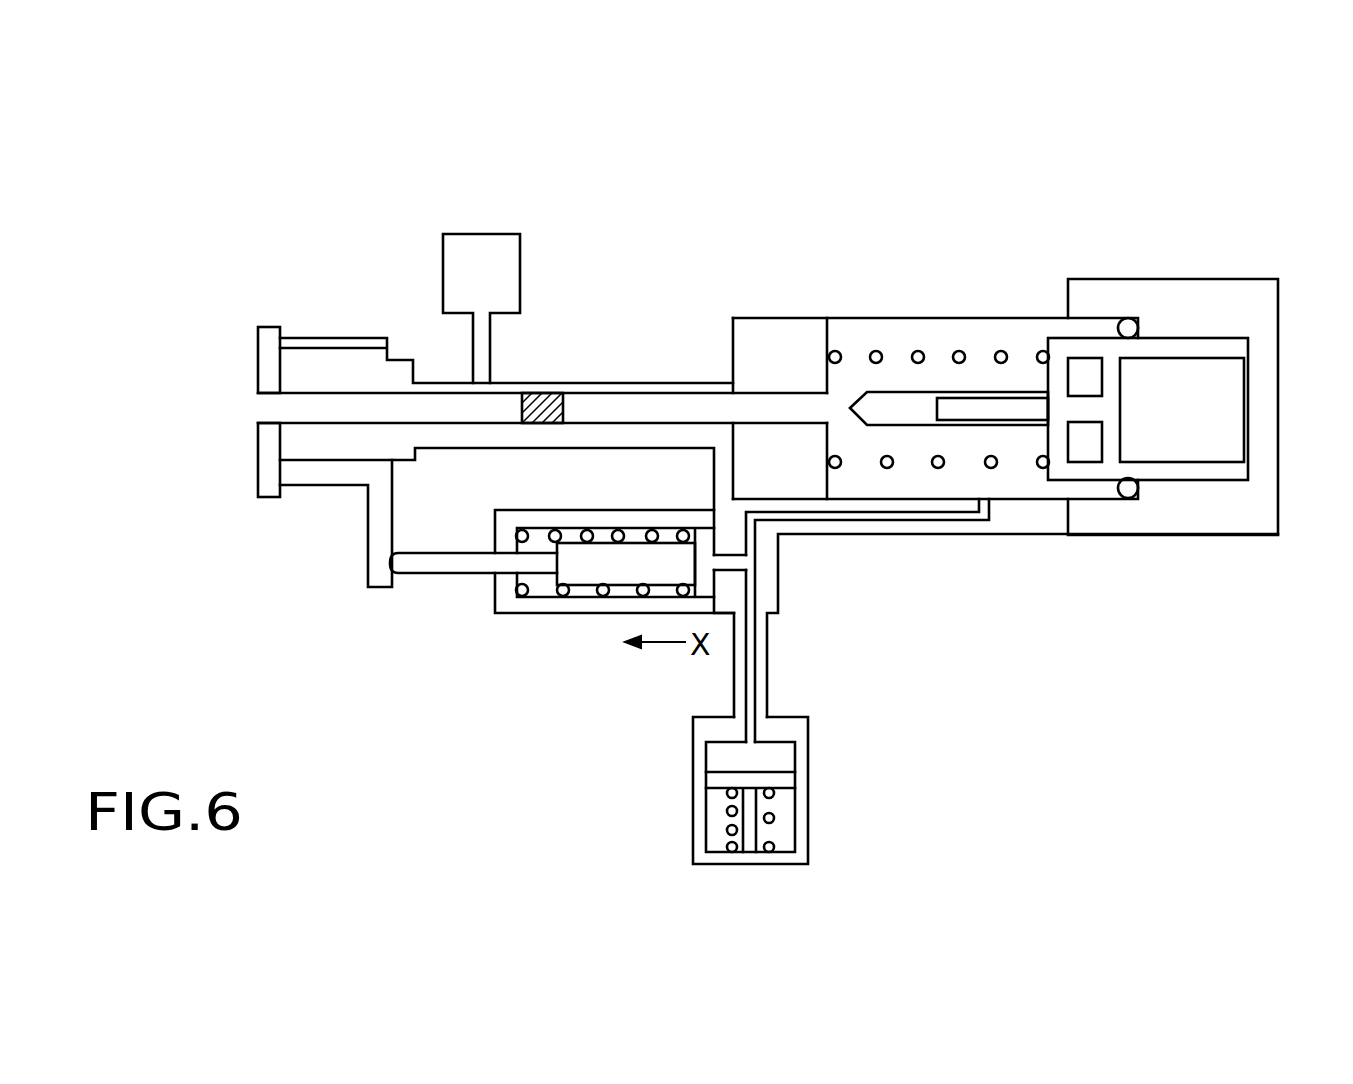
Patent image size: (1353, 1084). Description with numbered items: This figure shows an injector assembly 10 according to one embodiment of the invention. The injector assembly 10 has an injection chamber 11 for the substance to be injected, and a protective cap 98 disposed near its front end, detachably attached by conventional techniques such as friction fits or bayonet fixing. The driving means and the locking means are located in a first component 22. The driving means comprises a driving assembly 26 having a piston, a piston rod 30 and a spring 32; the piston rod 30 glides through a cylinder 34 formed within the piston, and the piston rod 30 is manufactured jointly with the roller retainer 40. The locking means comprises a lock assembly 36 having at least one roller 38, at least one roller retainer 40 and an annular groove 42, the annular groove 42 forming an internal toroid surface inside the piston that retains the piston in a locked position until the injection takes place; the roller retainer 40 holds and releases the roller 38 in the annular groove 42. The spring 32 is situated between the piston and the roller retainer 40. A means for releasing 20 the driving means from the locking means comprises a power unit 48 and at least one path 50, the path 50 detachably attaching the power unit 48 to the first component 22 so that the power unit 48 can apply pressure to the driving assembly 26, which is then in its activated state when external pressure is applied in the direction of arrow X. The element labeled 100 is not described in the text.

The injector assembly 10 is at (288, 184).
The protective cap 98 is at (267, 327).
The injection chamber 11 is at (507, 410).
The first component 22 is at (783, 251).
The driving assembly 26 is at (873, 306).
The spring 32 is at (959, 350).
The cylinder 34 is at (897, 410).
The piston rod 30 is at (983, 408).
The lock assembly 36 is at (1120, 268).
The roller retainer 40 is at (1062, 467).
The annular groove 42 is at (1138, 328).
The roller 38 is at (1138, 488).
The actuator cylinder 100 is at (447, 587).
The path 50 is at (755, 661).
The power unit 48 is at (808, 837).
The means for releasing 20 is at (833, 797).